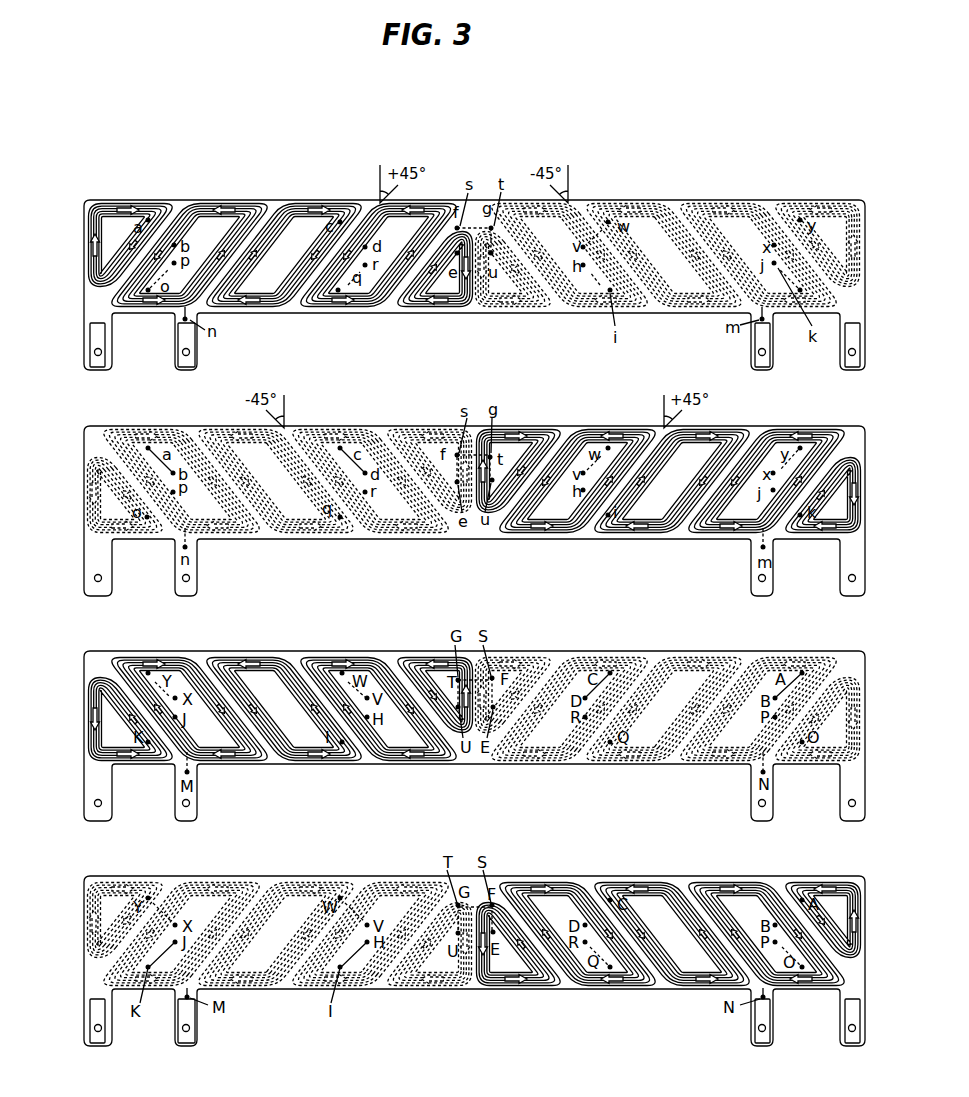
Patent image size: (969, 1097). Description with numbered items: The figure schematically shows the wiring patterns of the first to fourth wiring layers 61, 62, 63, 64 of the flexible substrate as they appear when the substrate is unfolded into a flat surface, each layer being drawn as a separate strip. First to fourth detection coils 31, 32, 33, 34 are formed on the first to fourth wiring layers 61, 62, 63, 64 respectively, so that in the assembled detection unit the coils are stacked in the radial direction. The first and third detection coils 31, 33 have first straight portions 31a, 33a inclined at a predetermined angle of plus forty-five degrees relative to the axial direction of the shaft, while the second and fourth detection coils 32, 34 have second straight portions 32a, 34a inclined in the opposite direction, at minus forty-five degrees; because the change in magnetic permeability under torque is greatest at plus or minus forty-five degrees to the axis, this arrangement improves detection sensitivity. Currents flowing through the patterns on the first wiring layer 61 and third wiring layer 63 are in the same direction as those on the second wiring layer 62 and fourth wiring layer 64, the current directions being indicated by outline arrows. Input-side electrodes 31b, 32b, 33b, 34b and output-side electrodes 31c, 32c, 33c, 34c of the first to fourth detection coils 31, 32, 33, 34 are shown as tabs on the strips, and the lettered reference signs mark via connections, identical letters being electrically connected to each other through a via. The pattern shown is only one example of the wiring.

The first wiring layer 61 is at (77, 197).
The second wiring layer 62 is at (78, 426).
The third wiring layer 63 is at (78, 652).
The fourth wiring layer 64 is at (78, 877).
The first detection coil 31 is at (168, 201).
The second detection coil 32 is at (789, 199).
The third detection coil 33 is at (572, 651).
The fourth detection coil 34 is at (385, 656).
The first straight portion 31a is at (390, 297).
The second straight portion 32a is at (557, 294).
The first straight portion 33a is at (662, 667).
The second straight portion 34a is at (290, 662).
The input-side electrode 31b is at (105, 363).
The output-side electrode 31c is at (753, 363).
The input-side electrode 32b is at (190, 363).
The output-side electrode 32c is at (843, 363).
The input-side electrode 33b is at (107, 1040).
The output-side electrode 33c is at (757, 1040).
The input-side electrode 34b is at (195, 1040).
The output-side electrode 34c is at (848, 1040).